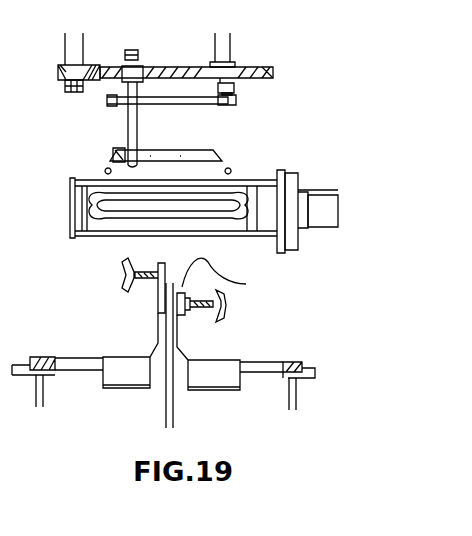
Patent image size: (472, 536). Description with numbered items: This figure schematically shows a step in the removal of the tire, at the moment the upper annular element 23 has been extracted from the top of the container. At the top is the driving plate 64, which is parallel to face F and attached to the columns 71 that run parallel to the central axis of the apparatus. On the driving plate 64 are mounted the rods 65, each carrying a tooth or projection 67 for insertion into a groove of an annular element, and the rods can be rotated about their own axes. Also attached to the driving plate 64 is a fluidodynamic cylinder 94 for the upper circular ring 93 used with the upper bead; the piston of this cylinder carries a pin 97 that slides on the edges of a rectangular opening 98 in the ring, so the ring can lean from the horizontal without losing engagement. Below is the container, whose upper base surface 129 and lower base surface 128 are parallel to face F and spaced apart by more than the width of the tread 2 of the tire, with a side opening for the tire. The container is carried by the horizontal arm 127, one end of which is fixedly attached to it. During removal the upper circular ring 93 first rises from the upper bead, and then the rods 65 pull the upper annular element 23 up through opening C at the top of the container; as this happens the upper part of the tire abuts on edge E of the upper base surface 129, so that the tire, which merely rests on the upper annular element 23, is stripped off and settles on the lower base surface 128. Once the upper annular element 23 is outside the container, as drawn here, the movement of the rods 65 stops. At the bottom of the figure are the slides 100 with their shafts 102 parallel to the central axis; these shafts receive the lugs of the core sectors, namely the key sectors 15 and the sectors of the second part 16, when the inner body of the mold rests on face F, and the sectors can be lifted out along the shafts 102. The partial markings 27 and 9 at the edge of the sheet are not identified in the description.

The driving plate 64 is at (183, 68).
The column 71 is at (77, 44).
The fluidodynamic cylinder 94 is at (226, 36).
The rod 65 is at (128, 125).
The pin 97 is at (232, 95).
The upper circular ring 93 is at (233, 103).
The rectangular opening 98 is at (233, 106).
The upper annular element 23 is at (115, 155).
The tooth or projection 67 is at (143, 163).
The opening C is at (175, 205).
The lower base surface 128 is at (110, 236).
The edge E is at (73, 188).
The upper base surface 129 is at (263, 172).
The horizontal arm 127 is at (262, 248).
The tread 2 is at (330, 228).
The key sector 15 is at (122, 274).
The sector of second part 16 is at (228, 305).
The shaft 102 is at (230, 277).
The slide 100 is at (127, 378).
The face F is at (292, 362).
The rail 27 is at (6, 277).
The frame 9 is at (3, 155).